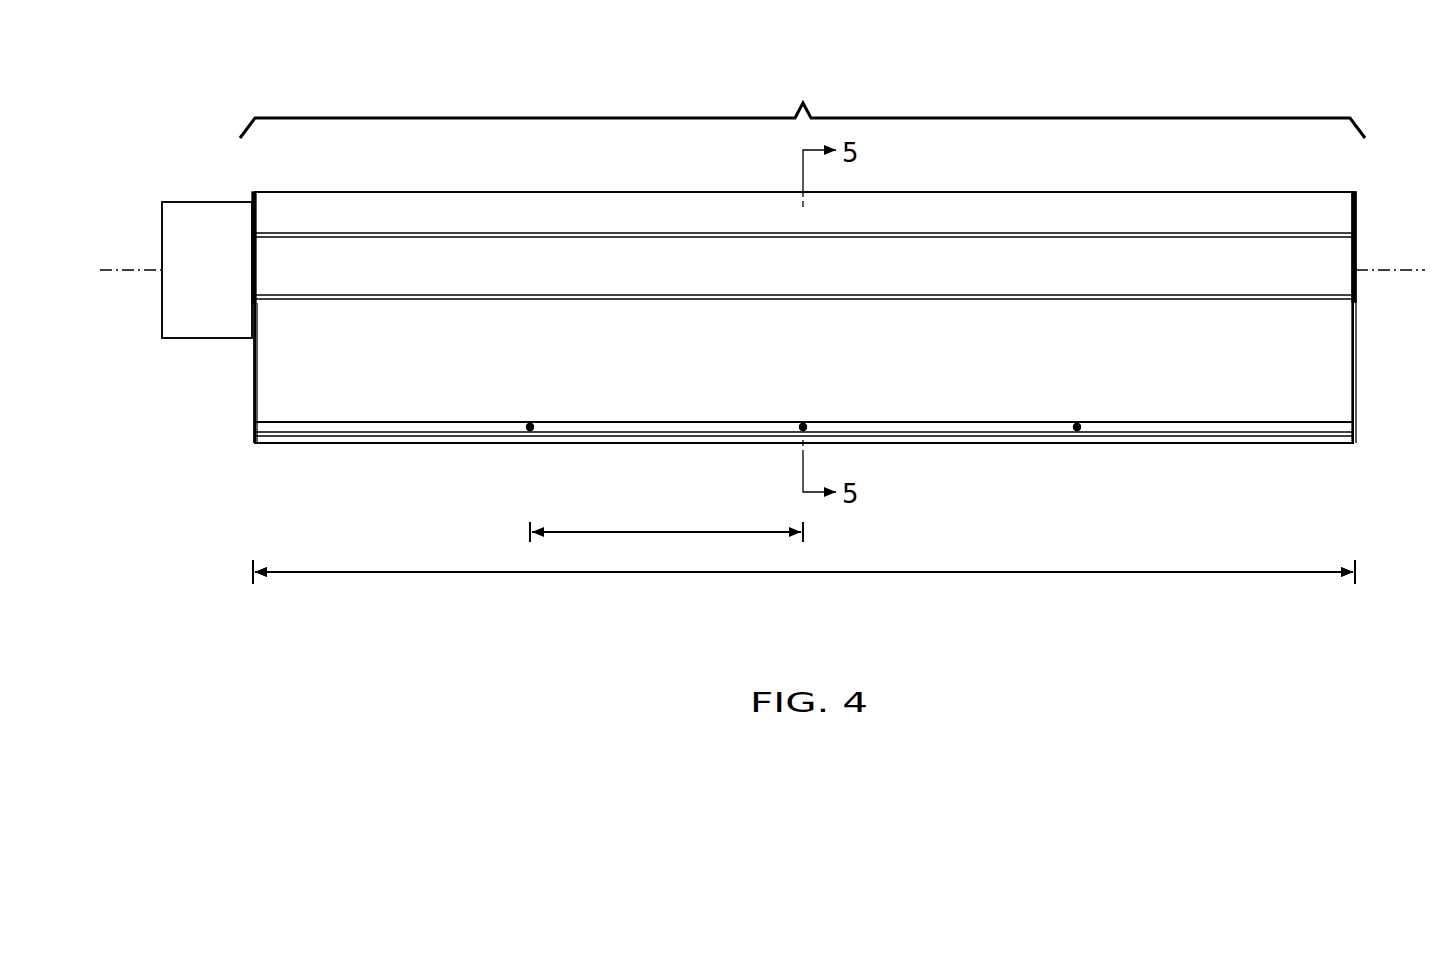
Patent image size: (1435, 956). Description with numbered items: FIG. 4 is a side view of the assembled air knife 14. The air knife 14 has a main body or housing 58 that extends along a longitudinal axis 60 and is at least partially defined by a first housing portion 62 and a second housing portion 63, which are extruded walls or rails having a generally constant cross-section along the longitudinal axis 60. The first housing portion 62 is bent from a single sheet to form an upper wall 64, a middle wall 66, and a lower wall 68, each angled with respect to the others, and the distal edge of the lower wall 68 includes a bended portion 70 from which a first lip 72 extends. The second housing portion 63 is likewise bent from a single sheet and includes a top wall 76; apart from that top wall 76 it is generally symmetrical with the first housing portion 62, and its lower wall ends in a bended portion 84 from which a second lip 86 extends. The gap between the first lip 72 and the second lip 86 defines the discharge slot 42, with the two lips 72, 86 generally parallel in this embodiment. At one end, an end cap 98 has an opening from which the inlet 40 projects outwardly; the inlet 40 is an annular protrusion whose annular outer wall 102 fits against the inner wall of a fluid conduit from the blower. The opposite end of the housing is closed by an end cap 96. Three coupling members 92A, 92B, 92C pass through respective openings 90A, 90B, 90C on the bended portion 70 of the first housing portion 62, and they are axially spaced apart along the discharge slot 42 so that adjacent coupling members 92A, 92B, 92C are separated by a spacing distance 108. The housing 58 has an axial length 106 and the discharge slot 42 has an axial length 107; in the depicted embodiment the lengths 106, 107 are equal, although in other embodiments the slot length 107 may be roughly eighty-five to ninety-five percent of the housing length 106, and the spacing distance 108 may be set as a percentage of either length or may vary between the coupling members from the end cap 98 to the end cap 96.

The air knife 14 is at (1018, 80).
The inlet 40 is at (162, 216).
The discharge slot 42 is at (657, 442).
The housing 58 is at (802, 106).
The longitudinal axis 60 is at (1395, 272).
The first housing portion 62 is at (1102, 170).
The second housing portion 63 is at (608, 214).
The upper wall 64 is at (384, 224).
The middle wall 66 is at (384, 278).
The lower wall 68 is at (384, 362).
The bended portion 70 is at (277, 428).
The first lip 72 is at (322, 435).
The top wall 76 is at (490, 191).
The bended portion 84 is at (407, 427).
The second lip 86 is at (370, 442).
The opening 90A is at (527, 430).
The opening 90B is at (799, 430).
The opening 90C is at (1074, 430).
The coupling member 92A is at (537, 418).
The coupling member 92B is at (811, 418).
The coupling member 92C is at (1085, 418).
The end cap 96 is at (1356, 210).
The end cap 98 is at (252, 390).
The annular outer wall 102 is at (232, 282).
The axial length 106 is at (803, 574).
The axial length 107 is at (804, 572).
The spacing distance 108 is at (665, 530).